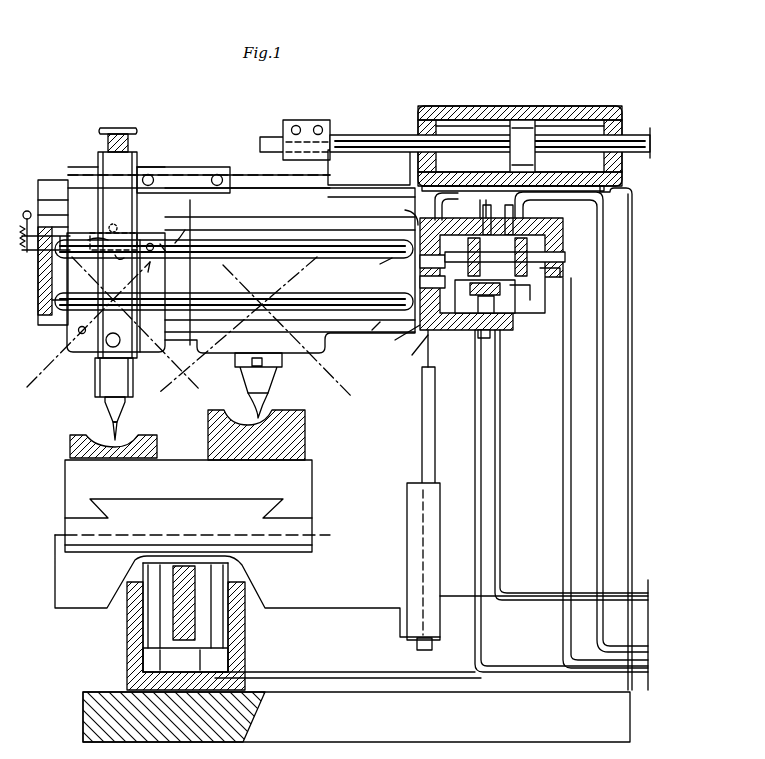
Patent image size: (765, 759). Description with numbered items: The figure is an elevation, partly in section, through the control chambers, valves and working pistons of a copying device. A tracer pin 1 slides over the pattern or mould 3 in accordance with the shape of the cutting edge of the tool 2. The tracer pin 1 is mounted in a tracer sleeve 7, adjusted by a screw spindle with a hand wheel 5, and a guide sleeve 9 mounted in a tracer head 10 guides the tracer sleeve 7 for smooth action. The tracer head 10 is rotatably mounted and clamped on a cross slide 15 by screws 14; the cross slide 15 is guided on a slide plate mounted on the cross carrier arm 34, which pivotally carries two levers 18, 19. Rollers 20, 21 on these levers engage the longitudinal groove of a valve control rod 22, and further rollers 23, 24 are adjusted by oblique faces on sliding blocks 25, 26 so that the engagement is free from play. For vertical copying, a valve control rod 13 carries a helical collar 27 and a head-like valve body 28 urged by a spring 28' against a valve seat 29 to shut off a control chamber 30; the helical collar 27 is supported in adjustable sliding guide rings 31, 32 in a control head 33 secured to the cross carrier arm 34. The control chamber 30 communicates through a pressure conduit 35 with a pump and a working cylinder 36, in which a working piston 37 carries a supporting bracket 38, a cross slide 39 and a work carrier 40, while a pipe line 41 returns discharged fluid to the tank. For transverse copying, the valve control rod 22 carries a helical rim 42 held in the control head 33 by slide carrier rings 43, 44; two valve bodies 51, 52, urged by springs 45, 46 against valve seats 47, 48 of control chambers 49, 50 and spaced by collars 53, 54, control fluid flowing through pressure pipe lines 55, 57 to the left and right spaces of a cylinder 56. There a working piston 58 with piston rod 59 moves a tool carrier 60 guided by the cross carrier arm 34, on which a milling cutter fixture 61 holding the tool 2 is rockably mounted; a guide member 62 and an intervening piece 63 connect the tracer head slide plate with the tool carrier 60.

The tracer pin 1 is at (108, 440).
The tool 2 is at (268, 410).
The pattern or mould 3 is at (157, 448).
The hand wheel 5 is at (120, 130).
The tracer sleeve 7 is at (106, 414).
The guide sleeve 9 is at (97, 386).
The tracer head 10 is at (97, 350).
The valve control rod 13 is at (290, 303).
The screws 14 is at (155, 274).
The cross slide 15 is at (150, 352).
The lever 18 is at (110, 226).
The lever 19 is at (128, 258).
The roller 20 is at (40, 262).
The roller 21 is at (156, 249).
The valve control rod 22 is at (294, 257).
The roller 23 is at (68, 248).
The roller 24 is at (170, 256).
The sliding block 25 is at (88, 240).
The sliding block 26 is at (185, 230).
The helical collar 27 is at (365, 340).
The valve body 28 is at (527, 506).
The spring 28' is at (442, 346).
The valve seat 29 is at (515, 322).
The control chamber 30 is at (488, 336).
The sliding guide ring 31 is at (400, 347).
The sliding guide ring 32 is at (411, 360).
The control head 33 is at (422, 281).
The cross carrier arm 34 is at (50, 180).
The pressure conduit 35 is at (476, 462).
The working cylinder 36 is at (140, 655).
The working piston 37 is at (150, 627).
The supporting bracket 38 is at (296, 606).
The cross slide 39 is at (312, 523).
The work carrier 40 is at (312, 482).
The pipe line 41 is at (498, 462).
The helical rim 42 is at (376, 268).
The slide carrier ring 43 is at (403, 213).
The slide carrier ring 44 is at (438, 230).
The spring 45 is at (462, 233).
The spring 46 is at (563, 258).
The valve seat 47 is at (490, 222).
The valve seat 48 is at (507, 222).
The control chamber 49 is at (500, 293).
The control chamber 50 is at (508, 277).
The valve body 51 is at (422, 262).
The valve body 52 is at (548, 279).
The collar 53 is at (522, 287).
The collar 54 is at (540, 252).
The pressure pipe line 55 is at (568, 480).
The cylinder 56 is at (505, 110).
The pressure pipe line 57 is at (606, 263).
The working piston 58 is at (530, 122).
The piston rod 59 is at (365, 142).
The tool carrier 60 is at (332, 203).
The milling cutter fixture 61 is at (264, 368).
The guide member 62 is at (266, 150).
The intervening piece 63 is at (185, 168).